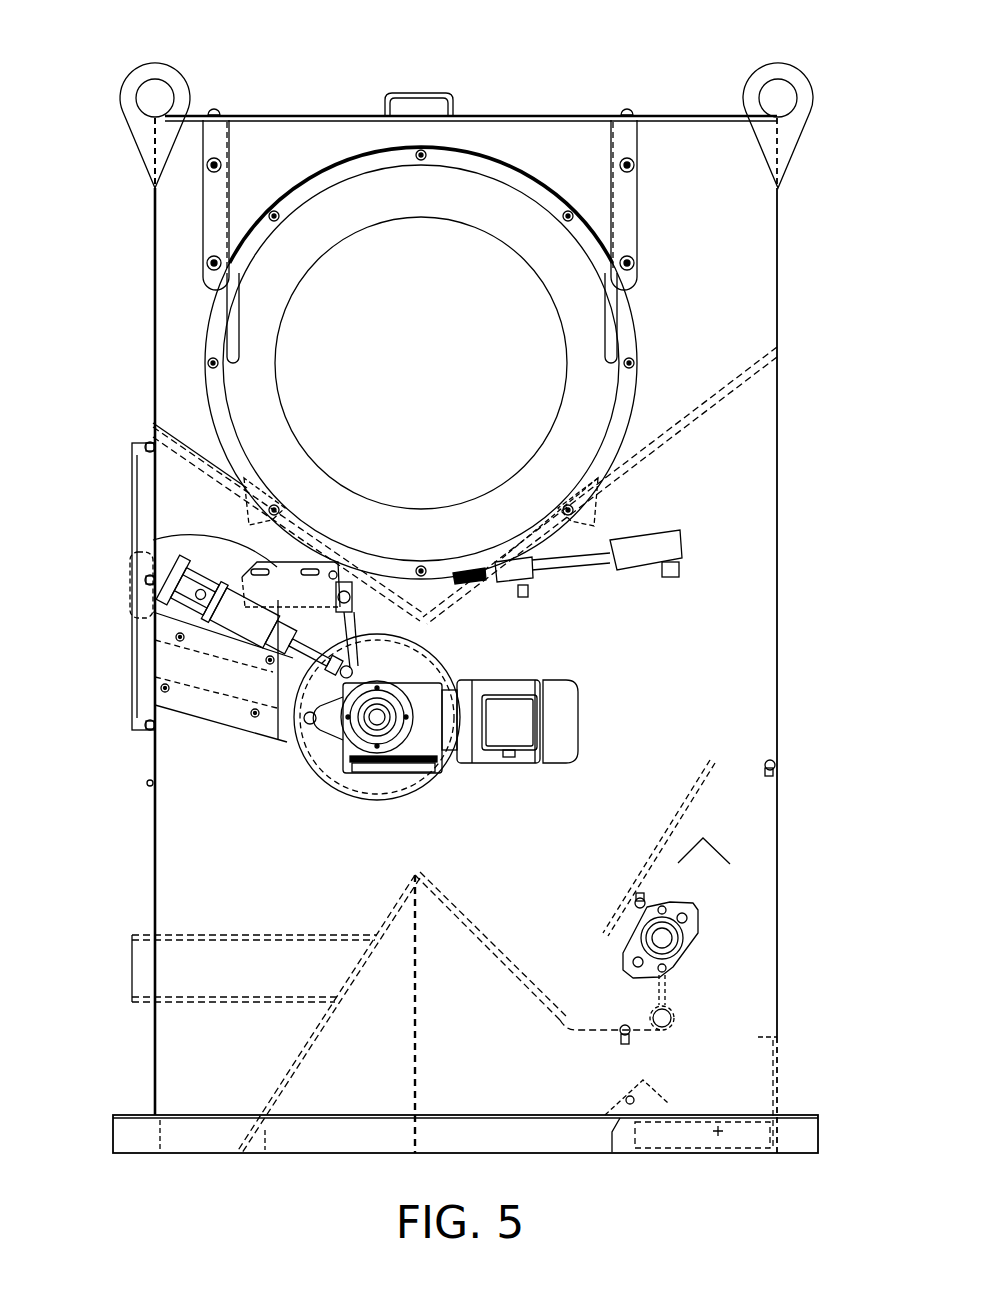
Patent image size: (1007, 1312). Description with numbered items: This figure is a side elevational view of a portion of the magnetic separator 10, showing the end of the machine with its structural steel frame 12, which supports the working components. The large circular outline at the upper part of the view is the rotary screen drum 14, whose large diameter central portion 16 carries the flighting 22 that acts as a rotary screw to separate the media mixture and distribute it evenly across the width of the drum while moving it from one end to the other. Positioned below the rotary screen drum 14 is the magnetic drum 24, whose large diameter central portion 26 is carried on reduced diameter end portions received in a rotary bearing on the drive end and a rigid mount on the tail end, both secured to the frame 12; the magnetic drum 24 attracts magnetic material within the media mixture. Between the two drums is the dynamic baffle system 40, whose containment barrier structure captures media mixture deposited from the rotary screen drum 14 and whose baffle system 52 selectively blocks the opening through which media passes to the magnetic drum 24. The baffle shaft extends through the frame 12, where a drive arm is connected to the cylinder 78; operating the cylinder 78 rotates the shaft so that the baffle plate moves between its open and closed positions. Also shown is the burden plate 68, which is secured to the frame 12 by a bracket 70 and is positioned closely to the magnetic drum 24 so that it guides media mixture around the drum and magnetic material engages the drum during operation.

The magnetic separator 10 is at (684, 72).
The frame 12 is at (782, 250).
The rotary screen drum 14 is at (319, 307).
The large diameter central portion 16 is at (562, 412).
The flighting 22 is at (254, 405).
The magnetic drum 24 is at (412, 782).
The large diameter central portion 26 is at (320, 777).
The dynamic baffle system 40 is at (123, 528).
The baffle system 52 is at (317, 620).
The burden plate 68 is at (292, 690).
The bracket 70 is at (165, 578).
The cylinder 78 is at (225, 648).